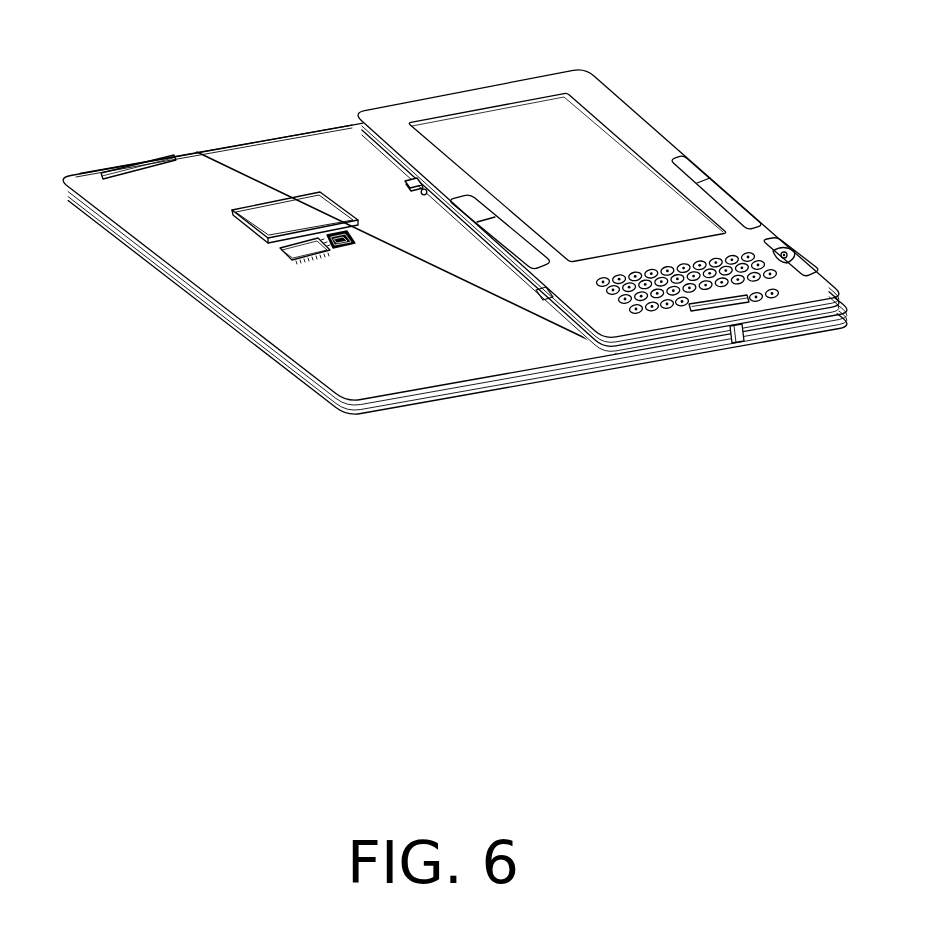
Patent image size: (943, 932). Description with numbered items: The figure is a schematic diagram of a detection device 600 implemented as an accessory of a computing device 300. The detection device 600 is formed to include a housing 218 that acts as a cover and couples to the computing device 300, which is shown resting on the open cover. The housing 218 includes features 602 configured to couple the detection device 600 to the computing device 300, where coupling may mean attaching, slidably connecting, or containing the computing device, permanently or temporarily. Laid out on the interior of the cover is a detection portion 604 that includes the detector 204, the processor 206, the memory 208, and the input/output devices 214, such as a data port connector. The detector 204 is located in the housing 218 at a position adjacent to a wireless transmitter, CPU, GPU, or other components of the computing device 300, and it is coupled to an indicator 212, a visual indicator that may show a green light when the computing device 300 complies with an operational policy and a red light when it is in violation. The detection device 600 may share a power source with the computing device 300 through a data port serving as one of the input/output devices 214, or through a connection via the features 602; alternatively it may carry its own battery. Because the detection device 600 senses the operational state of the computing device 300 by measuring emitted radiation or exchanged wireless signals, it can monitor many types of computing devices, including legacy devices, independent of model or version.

The detection device 600 is at (173, 38).
The detection portion 604 is at (200, 226).
The housing 218 is at (197, 152).
The indicator 212 is at (148, 150).
The detector 204 is at (233, 230).
The processor 206 is at (275, 260).
The memory 208 is at (340, 254).
The computing device 300 is at (531, 76).
The features 602 is at (396, 179).
The input/output devices 214 is at (733, 350).